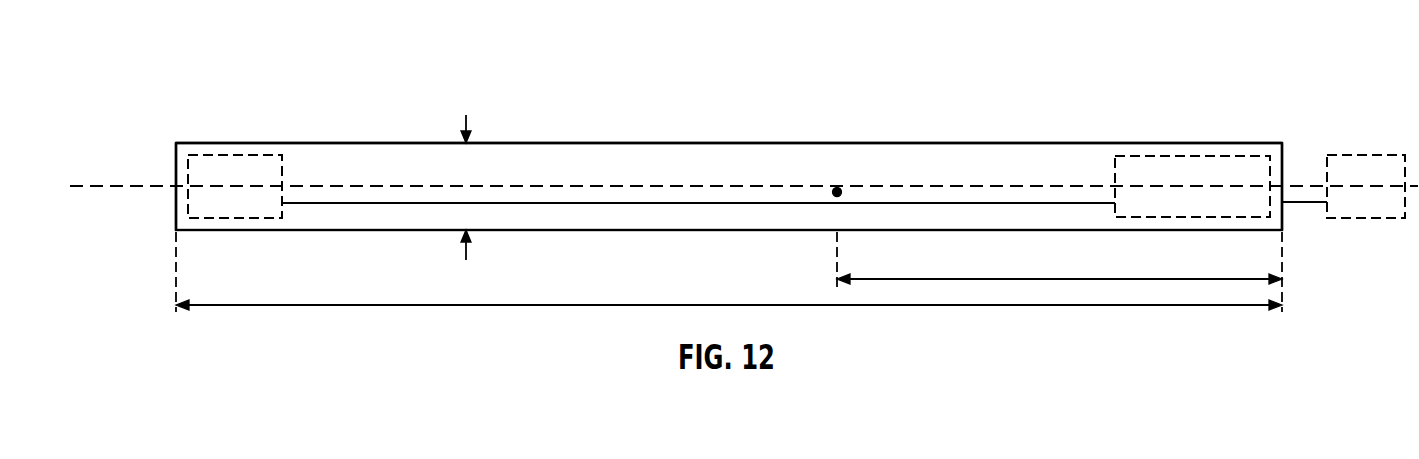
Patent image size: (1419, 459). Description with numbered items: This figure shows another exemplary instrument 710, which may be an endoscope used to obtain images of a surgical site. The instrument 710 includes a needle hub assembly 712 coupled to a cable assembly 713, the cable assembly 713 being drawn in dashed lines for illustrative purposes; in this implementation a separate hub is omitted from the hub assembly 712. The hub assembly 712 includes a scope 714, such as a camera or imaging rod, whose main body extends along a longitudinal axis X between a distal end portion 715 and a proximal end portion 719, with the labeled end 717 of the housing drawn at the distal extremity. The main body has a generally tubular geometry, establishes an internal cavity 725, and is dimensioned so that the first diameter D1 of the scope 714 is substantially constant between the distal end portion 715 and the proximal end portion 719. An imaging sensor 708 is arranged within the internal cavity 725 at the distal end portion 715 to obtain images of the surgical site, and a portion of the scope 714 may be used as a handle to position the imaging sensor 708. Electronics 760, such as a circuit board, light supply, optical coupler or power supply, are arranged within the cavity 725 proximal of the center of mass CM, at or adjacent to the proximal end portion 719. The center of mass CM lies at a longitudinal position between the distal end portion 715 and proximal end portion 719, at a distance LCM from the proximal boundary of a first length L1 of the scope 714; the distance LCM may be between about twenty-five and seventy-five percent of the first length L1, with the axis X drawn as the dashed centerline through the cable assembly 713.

The instrument 710 is at (163, 43).
The needle hub assembly 712 is at (541, 145).
The cable assembly 713 is at (1343, 201).
The scope 714 is at (590, 143).
The distal end portion 715 is at (243, 143).
The first end 717 is at (176, 168).
The proximal end portion 719 is at (1282, 152).
The internal cavity 725 is at (916, 143).
The imaging sensor 708 is at (221, 155).
The electronics 760 is at (1164, 154).
The longitudinal axis X is at (95, 186).
The first diameter D1 is at (466, 126).
The center of mass CM is at (837, 190).
The first length L1 is at (728, 305).
The distance LCM is at (1045, 279).